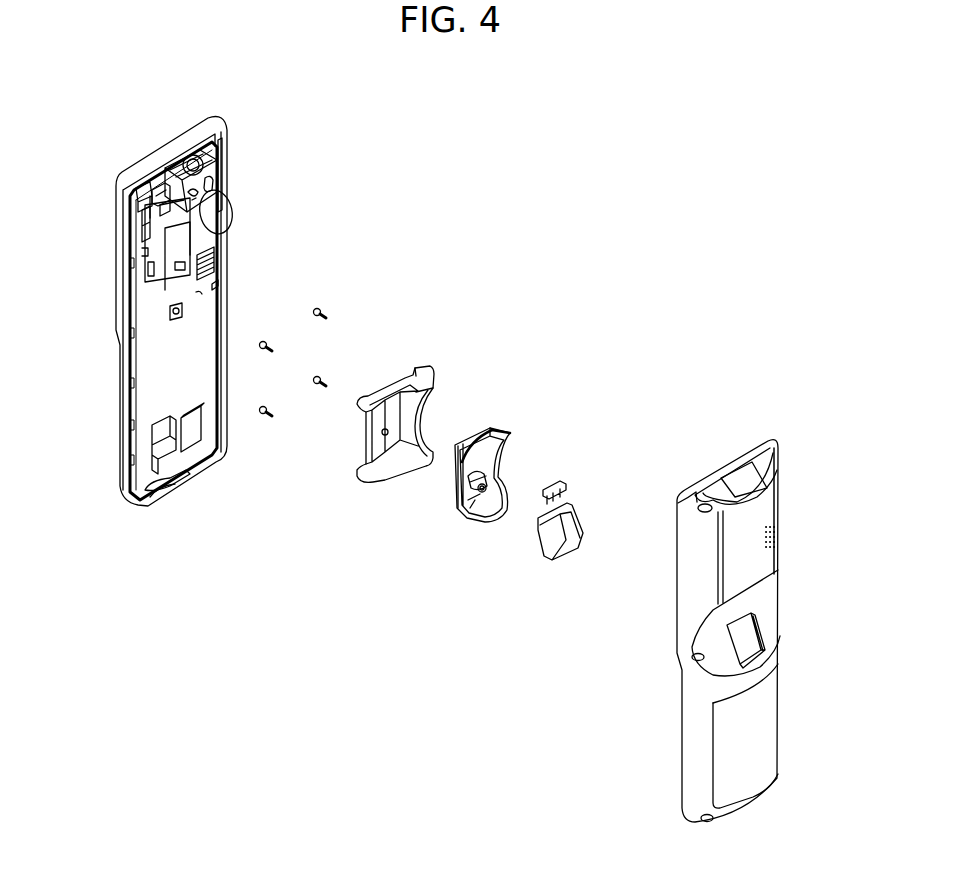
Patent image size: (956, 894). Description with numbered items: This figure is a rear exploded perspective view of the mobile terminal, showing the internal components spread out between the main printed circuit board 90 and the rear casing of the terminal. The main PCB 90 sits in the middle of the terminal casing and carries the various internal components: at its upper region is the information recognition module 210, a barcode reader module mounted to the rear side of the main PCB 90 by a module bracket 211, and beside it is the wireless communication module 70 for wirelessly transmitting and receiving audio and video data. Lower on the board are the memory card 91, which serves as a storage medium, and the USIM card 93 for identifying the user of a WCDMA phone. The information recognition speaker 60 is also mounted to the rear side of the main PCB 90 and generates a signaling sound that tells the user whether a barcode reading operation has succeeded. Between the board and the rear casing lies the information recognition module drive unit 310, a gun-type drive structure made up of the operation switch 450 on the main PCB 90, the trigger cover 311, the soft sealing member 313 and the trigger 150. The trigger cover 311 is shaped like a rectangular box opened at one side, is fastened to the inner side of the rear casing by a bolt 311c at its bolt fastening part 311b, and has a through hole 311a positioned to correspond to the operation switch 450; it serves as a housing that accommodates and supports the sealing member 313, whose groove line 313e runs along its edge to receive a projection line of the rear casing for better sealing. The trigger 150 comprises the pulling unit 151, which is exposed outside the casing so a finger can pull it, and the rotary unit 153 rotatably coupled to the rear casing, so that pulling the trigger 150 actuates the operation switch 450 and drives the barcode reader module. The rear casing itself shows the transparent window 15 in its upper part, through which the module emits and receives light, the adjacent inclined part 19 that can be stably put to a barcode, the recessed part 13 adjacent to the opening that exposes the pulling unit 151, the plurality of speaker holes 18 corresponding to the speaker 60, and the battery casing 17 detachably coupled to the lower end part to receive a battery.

The recessed part of the rear casing 13 is at (768, 599).
The window 15 is at (752, 482).
The battery casing 17 is at (768, 722).
The speaker holes 18 is at (780, 535).
The inclined part of the rear casing 19 is at (772, 457).
The information recognition speaker 60 is at (232, 206).
The wireless communication module 70 is at (146, 234).
The main printed circuit board 90 is at (148, 377).
The memory card 91 is at (190, 434).
The USIM card 93 is at (166, 432).
The trigger 150 is at (567, 544).
The pulling unit 151 is at (573, 525).
The rotary unit 153 is at (565, 482).
The information recognition module 210 is at (188, 148).
The module bracket 211 is at (166, 170).
The information recognition module drive unit 310 is at (260, 536).
The trigger cover 311 is at (421, 434).
The through hole 311a is at (390, 430).
The bolt fastening part 311b is at (420, 368).
The bolt 311c is at (317, 305).
The sealing member 313 is at (503, 509).
The groove line 313e is at (498, 462).
The operation switch 450 is at (176, 322).